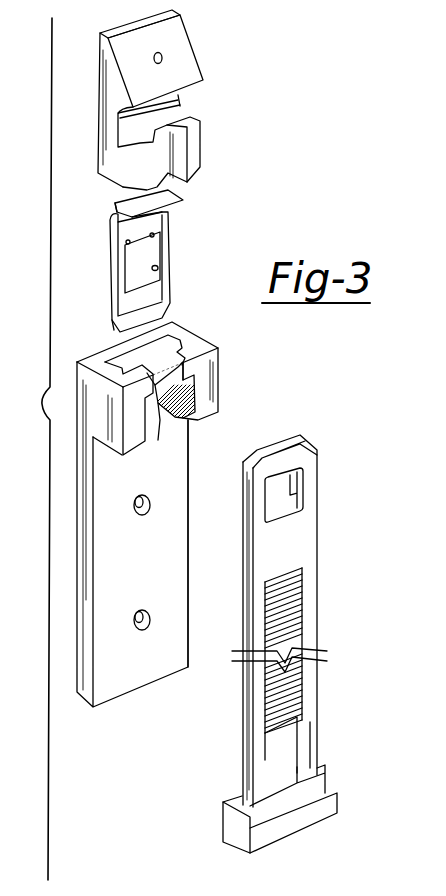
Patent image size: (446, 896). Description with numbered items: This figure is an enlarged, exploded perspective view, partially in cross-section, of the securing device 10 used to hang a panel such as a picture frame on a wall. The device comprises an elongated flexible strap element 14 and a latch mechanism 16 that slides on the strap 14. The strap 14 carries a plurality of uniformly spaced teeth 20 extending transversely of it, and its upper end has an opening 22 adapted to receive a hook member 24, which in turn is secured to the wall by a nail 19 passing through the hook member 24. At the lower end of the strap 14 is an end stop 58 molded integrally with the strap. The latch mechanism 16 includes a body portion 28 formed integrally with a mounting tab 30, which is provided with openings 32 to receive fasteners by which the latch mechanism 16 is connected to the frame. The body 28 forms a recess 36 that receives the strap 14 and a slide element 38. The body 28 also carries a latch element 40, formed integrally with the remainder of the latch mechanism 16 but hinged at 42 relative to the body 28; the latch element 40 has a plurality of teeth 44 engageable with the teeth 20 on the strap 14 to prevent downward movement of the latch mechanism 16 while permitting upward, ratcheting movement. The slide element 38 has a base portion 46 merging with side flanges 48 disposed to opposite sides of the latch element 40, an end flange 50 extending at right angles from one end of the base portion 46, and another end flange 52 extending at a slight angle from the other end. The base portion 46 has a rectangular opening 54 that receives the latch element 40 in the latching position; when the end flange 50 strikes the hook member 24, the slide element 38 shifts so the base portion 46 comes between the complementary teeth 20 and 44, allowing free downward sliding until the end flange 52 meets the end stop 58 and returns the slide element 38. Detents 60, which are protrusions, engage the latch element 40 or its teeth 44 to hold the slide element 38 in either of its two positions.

The securing device 10 is at (208, 280).
The strap element 14 is at (310, 580).
The latch mechanism 16 is at (222, 382).
The nail 19 is at (167, 52).
The teeth 20 is at (318, 597).
The opening 22 is at (292, 492).
The hook member 24 is at (197, 130).
The body portion 28 is at (95, 393).
The mounting tab 30 is at (107, 533).
The openings 32 is at (152, 507).
The recess 36 is at (173, 333).
The slide element 38 is at (110, 248).
The latch element 40 is at (278, 440).
The hinge 42 is at (195, 383).
The latch teeth 44 is at (158, 410).
The base portion 46 is at (153, 223).
The side flanges 48 is at (155, 268).
The end flange 50 is at (173, 197).
The end flange 52 is at (113, 337).
The rectangular opening 54 is at (158, 270).
The end stop 58 is at (338, 807).
The detents 60 is at (115, 197).